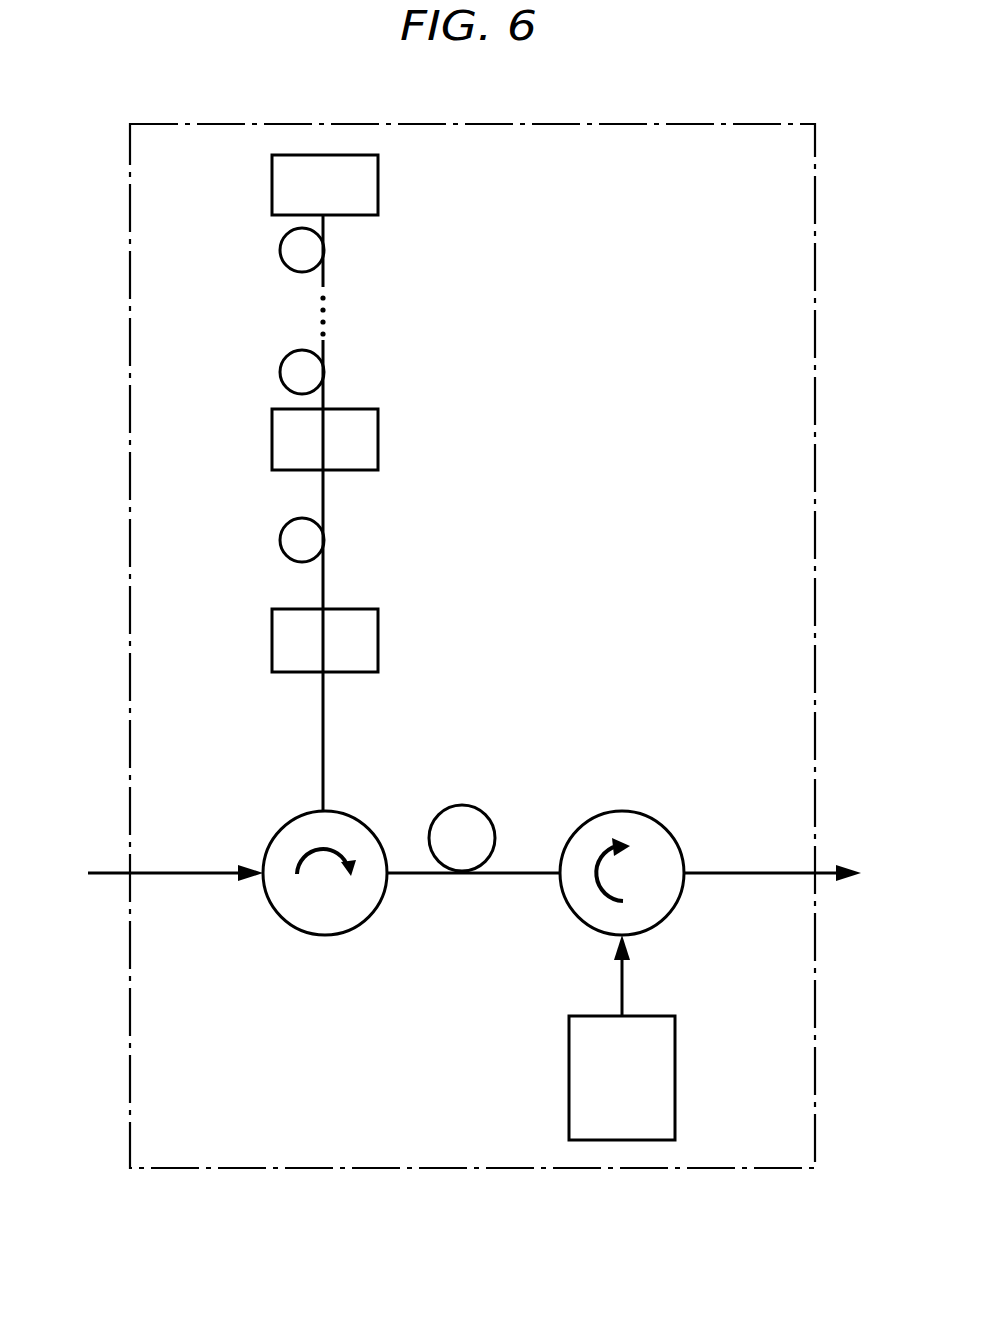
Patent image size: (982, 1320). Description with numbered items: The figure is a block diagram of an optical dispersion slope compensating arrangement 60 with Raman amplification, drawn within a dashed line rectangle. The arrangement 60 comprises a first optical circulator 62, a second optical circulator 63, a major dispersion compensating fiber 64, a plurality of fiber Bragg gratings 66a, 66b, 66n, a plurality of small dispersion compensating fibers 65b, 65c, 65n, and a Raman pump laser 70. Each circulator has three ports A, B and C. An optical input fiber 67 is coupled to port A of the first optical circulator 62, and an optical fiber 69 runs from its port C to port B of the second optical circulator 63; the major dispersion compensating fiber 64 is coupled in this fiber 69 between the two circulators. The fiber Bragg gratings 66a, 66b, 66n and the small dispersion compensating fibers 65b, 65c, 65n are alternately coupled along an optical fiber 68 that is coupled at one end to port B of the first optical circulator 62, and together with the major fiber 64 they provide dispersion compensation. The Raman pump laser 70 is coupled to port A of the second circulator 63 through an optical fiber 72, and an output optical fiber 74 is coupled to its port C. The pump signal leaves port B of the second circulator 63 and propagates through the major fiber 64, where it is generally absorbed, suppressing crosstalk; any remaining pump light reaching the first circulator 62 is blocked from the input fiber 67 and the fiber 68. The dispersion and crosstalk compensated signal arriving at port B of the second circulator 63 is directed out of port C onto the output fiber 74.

The optical dispersion slope compensating arrangement 60 is at (130, 308).
The first optical circulator 62 is at (273, 912).
The second optical circulator 63 is at (572, 911).
The major dispersion compensating fiber 64 is at (458, 805).
The small dispersion compensating fiber 65n is at (281, 254).
The small dispersion compensating fiber 65c is at (281, 373).
The small dispersion compensating fiber 65b is at (281, 544).
The fiber Bragg grating 66n is at (272, 181).
The fiber Bragg grating 66b is at (272, 440).
The fiber Bragg grating 66a is at (272, 650).
The optical input fiber 67 is at (168, 873).
The optical fiber 68 is at (325, 746).
The optical output fiber 69 is at (405, 874).
The Raman pump laser 70 is at (569, 1056).
The optical fiber 72 is at (623, 994).
The output optical fiber 74 is at (756, 873).